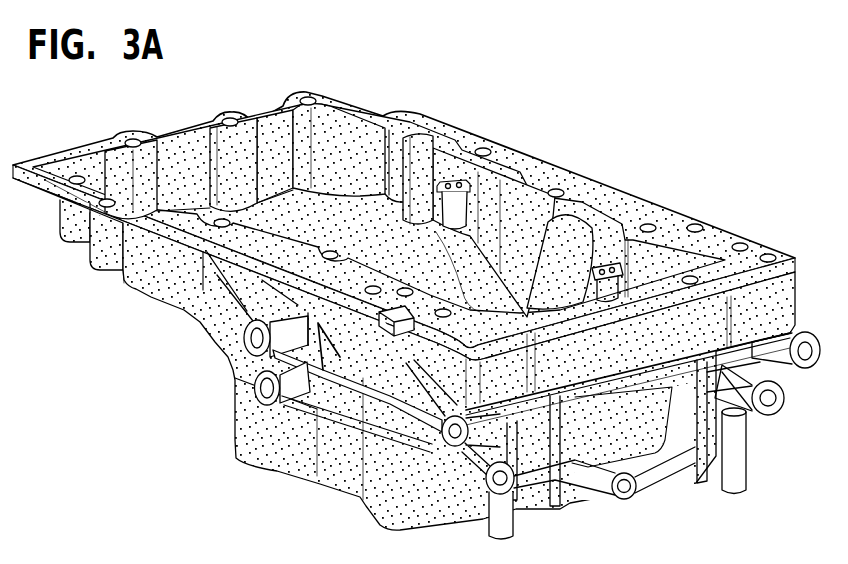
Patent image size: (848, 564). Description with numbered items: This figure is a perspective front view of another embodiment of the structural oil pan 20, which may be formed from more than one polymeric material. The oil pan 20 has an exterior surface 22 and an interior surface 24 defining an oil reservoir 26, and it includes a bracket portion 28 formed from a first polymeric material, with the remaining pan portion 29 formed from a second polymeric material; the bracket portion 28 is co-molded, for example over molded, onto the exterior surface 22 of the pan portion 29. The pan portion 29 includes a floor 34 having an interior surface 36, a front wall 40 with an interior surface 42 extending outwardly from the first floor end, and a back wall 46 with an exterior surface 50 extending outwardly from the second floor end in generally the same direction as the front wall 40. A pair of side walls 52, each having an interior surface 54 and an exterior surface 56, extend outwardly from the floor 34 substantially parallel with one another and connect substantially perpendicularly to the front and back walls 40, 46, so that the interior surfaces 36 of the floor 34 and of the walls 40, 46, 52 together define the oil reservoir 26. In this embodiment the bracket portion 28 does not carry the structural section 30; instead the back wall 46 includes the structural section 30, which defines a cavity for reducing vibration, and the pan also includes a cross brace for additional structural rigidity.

The oil pan 20 is at (702, 173).
The exterior surface 22 is at (300, 455).
The interior surface 24 is at (383, 225).
The oil reservoir 26 is at (507, 241).
The bracket portion 28 is at (774, 403).
The pan portion 29 is at (293, 213).
The structural section 30 is at (628, 345).
The floor 34 is at (311, 208).
The interior surface 36 is at (321, 225).
The front wall 40 is at (190, 150).
The interior surface 42 is at (265, 151).
The back wall 46 is at (690, 282).
The exterior surface 50 is at (623, 434).
The side walls 52 is at (595, 222).
The interior surface 54 is at (437, 166).
The exterior surface 56 is at (144, 273).